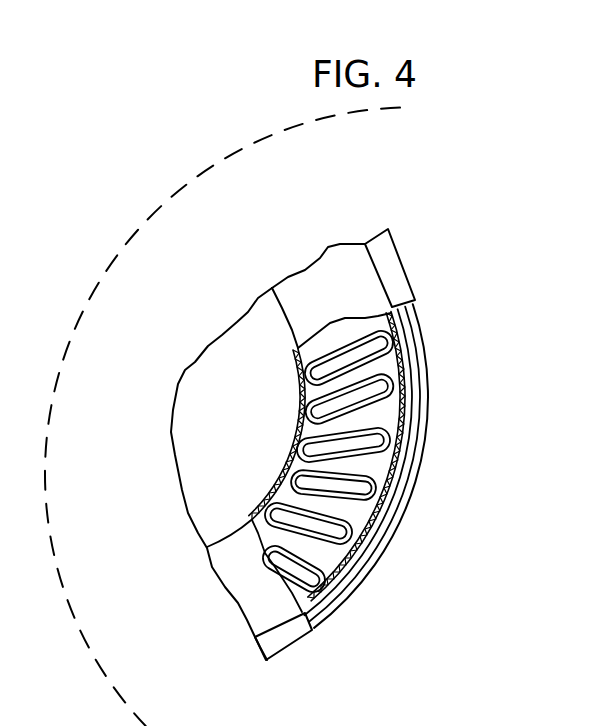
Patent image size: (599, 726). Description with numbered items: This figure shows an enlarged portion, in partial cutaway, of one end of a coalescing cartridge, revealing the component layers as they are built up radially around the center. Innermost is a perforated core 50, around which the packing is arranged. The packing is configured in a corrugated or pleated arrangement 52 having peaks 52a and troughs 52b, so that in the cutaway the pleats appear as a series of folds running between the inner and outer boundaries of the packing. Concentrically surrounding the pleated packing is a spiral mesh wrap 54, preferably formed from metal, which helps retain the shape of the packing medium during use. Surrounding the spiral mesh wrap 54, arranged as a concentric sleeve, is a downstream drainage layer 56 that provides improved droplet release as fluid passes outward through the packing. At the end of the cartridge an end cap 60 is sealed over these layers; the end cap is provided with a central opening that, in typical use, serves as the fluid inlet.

The perforated core 50 is at (300, 380).
The corrugated or pleated arrangement 52 is at (364, 424).
The peaks 52a is at (392, 445).
The troughs 52b is at (297, 452).
The spiral mesh wrap 54 is at (370, 523).
The downstream drainage layer 56 is at (343, 597).
The end cap 60 is at (328, 246).